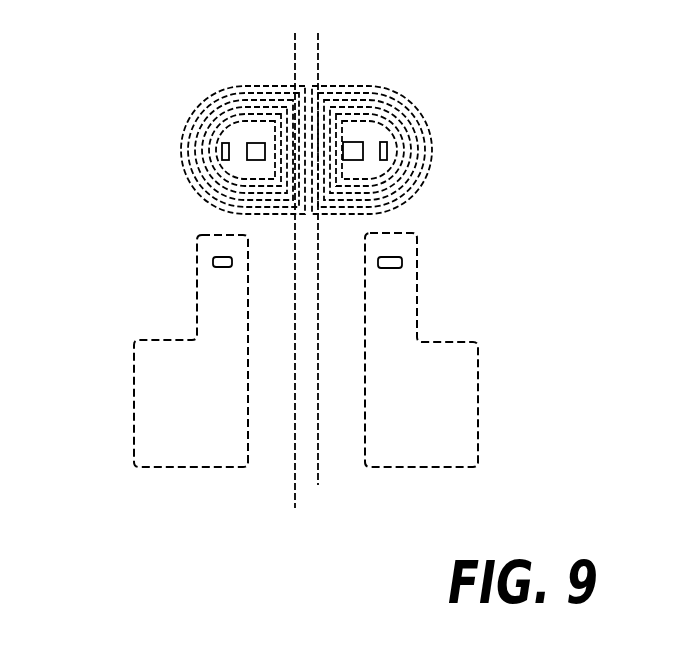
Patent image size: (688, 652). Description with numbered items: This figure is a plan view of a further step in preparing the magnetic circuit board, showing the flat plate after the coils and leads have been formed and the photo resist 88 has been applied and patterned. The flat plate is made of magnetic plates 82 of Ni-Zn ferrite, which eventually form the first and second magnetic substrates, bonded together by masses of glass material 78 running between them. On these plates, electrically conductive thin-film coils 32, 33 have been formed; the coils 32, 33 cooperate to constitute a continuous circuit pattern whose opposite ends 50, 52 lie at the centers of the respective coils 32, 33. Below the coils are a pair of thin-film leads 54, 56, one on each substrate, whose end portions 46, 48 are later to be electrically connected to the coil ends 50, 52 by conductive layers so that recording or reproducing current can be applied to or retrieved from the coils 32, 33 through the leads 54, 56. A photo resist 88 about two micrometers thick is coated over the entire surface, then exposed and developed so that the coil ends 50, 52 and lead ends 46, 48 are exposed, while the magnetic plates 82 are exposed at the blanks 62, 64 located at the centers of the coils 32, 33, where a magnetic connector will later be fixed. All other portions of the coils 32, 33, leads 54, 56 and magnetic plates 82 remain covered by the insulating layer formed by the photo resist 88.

The coil 32 is at (220, 97).
The coil 33 is at (418, 108).
The blank 62 is at (257, 143).
The blank 64 is at (355, 142).
The end of coil 50 is at (222, 152).
The end of coil 52 is at (388, 150).
The end portion of lead 46 is at (217, 264).
The end portion of lead 48 is at (382, 267).
The lead 54 is at (130, 405).
The lead 56 is at (480, 440).
The mass of glass material 78 is at (295, 438).
The magnetic plate 82 is at (315, 470).
The photo resist 88 is at (503, 228).